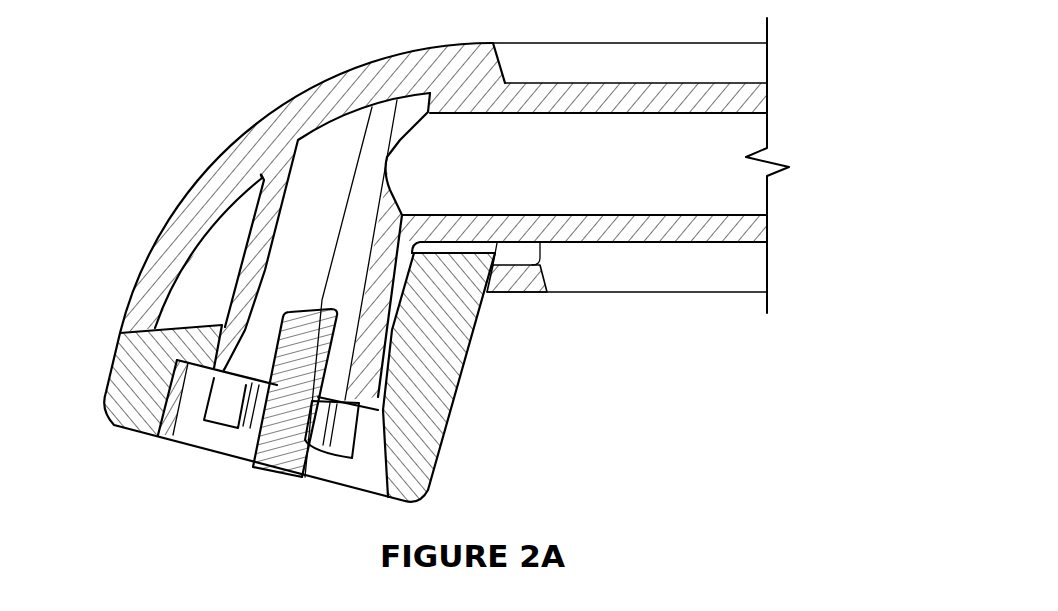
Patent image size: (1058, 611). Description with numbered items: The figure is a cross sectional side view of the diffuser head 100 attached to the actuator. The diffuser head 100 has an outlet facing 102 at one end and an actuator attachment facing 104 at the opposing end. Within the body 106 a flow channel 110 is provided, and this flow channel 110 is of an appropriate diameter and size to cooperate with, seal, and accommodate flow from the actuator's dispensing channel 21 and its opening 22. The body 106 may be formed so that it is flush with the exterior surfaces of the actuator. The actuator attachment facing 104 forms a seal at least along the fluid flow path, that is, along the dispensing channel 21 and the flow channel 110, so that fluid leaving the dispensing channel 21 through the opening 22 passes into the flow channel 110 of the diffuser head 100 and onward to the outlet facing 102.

The dispensing channel 21 is at (713, 178).
The opening 22 is at (347, 300).
The diffuser head 100 is at (460, 390).
The outlet facing 102 is at (268, 468).
The actuator attachment facing 104 is at (465, 272).
The body 106 is at (122, 380).
The flow channel 110 is at (303, 362).